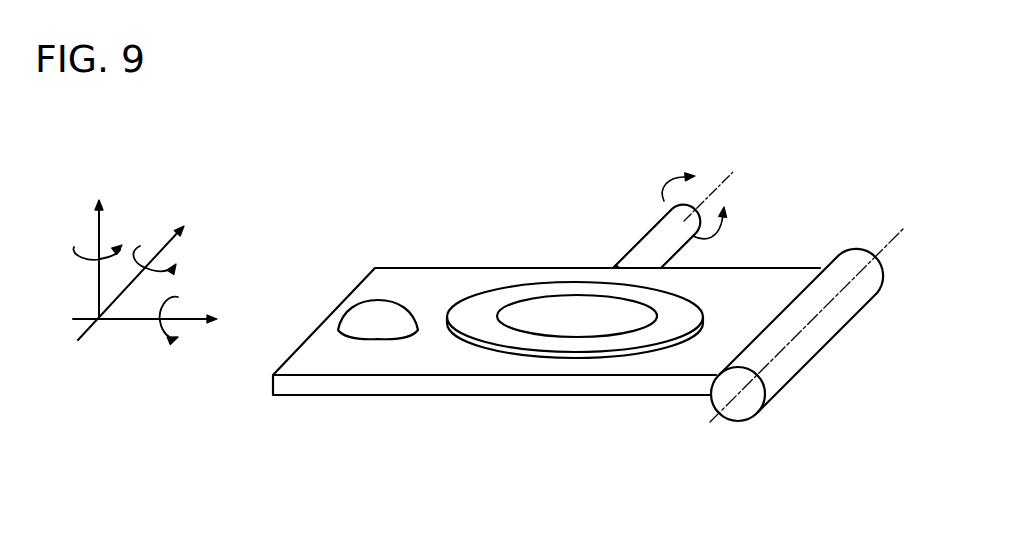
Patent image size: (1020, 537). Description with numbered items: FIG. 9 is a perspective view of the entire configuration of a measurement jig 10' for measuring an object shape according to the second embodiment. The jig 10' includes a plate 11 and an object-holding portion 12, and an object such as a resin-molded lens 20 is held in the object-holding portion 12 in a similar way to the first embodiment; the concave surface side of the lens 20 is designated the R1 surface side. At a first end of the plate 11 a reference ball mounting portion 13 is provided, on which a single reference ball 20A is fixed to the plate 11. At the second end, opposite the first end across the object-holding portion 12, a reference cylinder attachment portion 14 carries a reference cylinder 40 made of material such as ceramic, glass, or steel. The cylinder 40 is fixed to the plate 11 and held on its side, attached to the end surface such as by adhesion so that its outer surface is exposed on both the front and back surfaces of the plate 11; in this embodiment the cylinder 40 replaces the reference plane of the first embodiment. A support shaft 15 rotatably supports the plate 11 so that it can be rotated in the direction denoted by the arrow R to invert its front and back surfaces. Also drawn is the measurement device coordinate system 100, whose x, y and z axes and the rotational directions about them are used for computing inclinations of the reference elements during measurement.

The measurement jig 10' is at (479, 177).
The plate 11 is at (437, 278).
The object-holding portion 12 is at (530, 360).
The reference ball mounting portion 13 is at (366, 352).
The reference cylinder attachment portion 14 is at (782, 294).
The support shaft 15 is at (645, 237).
The lens 20 is at (575, 294).
The reference ball 20A is at (371, 294).
The reference cylinder 40 is at (835, 248).
The rotation direction arrow R is at (694, 192).
The R1 surface side R1 is at (585, 328).
The measurement device coordinate system 100 is at (144, 282).